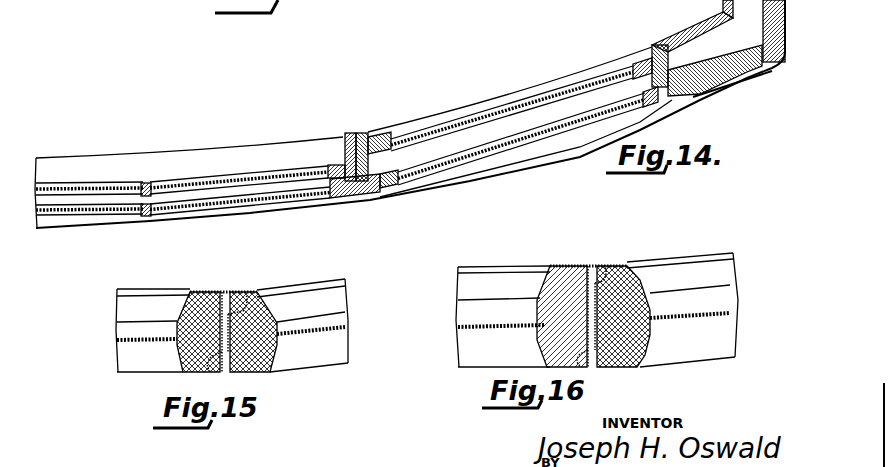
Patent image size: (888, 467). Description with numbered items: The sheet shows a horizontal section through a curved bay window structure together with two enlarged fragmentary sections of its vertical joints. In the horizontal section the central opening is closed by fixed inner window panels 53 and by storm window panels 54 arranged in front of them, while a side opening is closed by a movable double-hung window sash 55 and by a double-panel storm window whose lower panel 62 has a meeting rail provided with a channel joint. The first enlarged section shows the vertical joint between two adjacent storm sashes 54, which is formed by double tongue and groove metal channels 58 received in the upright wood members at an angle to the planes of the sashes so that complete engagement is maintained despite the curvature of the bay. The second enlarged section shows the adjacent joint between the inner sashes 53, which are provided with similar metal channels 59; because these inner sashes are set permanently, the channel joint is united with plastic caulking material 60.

In FIG. 14, the fixed inner window panel 53 is at (89, 183).
In FIG. 16, the fixed inner window panel 53 is at (483, 266).
In FIG. 14, the storm window panel 54 is at (83, 216).
In FIG. 15, the storm window panel 54 is at (133, 366).
In FIG. 14, the double-hung window sash 55 is at (397, 128).
In FIG. 15, the metal channel 58 is at (207, 290).
In FIG. 16, the metal channel 59 is at (573, 266).
In FIG. 16, the plastic caulking material 60 is at (606, 332).
In FIG. 14, the lower panel 62 is at (393, 185).